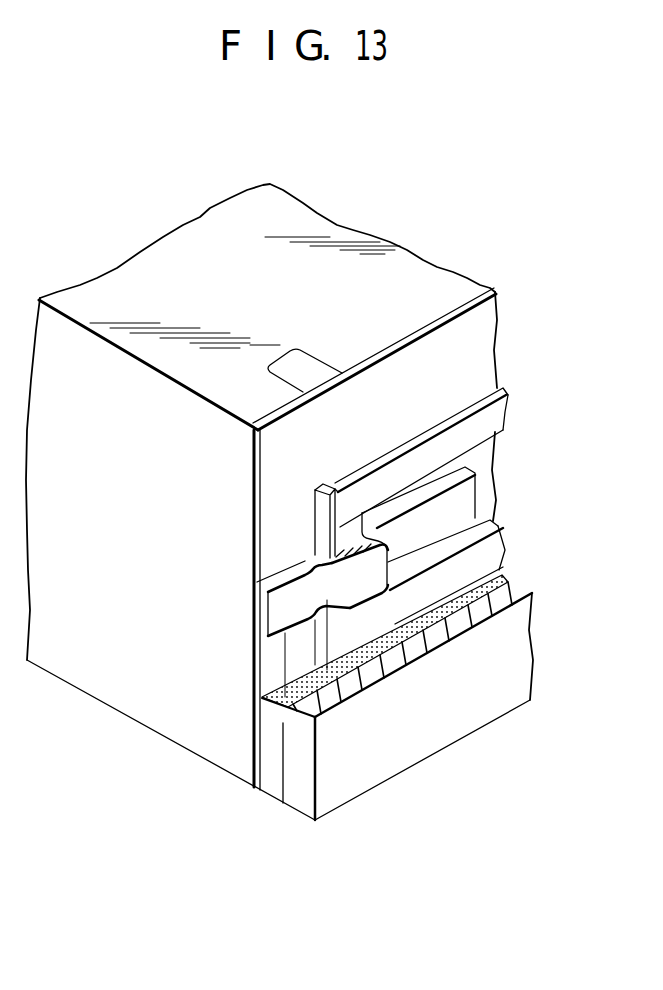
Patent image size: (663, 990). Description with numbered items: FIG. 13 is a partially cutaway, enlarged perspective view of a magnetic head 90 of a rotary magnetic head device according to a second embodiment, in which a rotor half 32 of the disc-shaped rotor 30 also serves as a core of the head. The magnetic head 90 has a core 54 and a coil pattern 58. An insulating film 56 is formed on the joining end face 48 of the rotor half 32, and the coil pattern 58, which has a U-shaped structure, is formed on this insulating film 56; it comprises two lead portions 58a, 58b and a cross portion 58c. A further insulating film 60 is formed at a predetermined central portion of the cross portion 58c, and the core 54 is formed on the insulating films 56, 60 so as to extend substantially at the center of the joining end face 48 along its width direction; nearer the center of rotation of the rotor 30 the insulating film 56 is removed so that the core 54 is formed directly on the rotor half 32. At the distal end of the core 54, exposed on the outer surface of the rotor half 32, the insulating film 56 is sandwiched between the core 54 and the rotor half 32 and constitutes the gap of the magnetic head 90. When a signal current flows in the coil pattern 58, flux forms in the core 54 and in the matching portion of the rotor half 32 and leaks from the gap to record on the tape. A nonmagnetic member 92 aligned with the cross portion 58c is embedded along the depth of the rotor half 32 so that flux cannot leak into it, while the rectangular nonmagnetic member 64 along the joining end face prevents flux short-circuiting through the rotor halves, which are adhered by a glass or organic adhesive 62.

The disc-shaped rotor 30 is at (135, 733).
The rotor half 32 is at (92, 678).
The joining end face 48 is at (252, 497).
The core 54 is at (283, 603).
The insulating film 56 is at (452, 333).
The coil pattern 58 is at (442, 498).
The lead portion 58a is at (447, 437).
The lead portion 58b is at (497, 555).
The cross portion 58c is at (342, 543).
The insulating film 60 is at (345, 570).
The glass or organic adhesive 62 is at (272, 775).
The rectangular nonmagnetic member 64 is at (358, 780).
The magnetic head 90 is at (292, 818).
The nonmagnetic member 92 is at (313, 363).